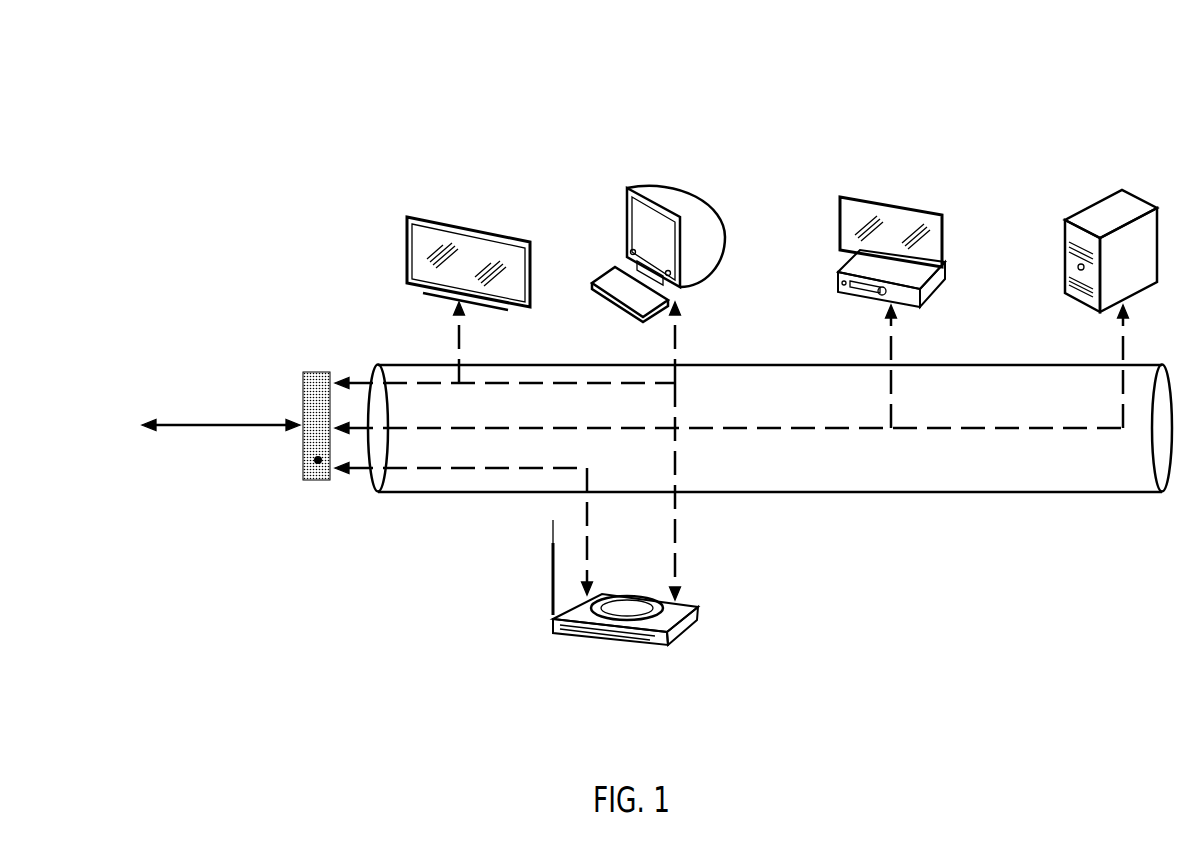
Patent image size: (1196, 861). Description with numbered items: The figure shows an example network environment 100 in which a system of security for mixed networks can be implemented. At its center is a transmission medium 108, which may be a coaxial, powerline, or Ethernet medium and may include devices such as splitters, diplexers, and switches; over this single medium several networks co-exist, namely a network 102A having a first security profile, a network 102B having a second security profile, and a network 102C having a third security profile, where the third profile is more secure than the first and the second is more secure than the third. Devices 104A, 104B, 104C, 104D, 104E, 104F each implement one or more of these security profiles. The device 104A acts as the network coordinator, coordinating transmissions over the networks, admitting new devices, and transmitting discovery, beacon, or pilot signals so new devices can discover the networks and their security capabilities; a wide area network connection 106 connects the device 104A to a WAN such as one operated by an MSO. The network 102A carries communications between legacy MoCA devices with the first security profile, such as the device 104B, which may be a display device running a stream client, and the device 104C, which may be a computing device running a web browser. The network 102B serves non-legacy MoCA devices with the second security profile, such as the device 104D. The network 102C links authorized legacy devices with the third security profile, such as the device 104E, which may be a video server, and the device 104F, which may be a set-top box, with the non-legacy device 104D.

The network environment 100 is at (104, 76).
The network having a first security profile 102A is at (408, 383).
The network having a second security profile 102B is at (447, 470).
The network having a third security profile 102C is at (947, 433).
The device 104A is at (318, 372).
The device 104B is at (470, 230).
The device 104C is at (678, 190).
The device 104D is at (627, 650).
The device 104E is at (945, 280).
The device 104F is at (1130, 190).
The wide area network connection 106 is at (243, 423).
The transmission medium 108 is at (1043, 493).